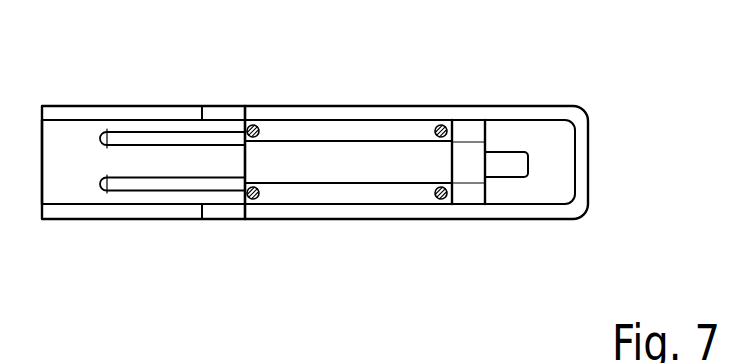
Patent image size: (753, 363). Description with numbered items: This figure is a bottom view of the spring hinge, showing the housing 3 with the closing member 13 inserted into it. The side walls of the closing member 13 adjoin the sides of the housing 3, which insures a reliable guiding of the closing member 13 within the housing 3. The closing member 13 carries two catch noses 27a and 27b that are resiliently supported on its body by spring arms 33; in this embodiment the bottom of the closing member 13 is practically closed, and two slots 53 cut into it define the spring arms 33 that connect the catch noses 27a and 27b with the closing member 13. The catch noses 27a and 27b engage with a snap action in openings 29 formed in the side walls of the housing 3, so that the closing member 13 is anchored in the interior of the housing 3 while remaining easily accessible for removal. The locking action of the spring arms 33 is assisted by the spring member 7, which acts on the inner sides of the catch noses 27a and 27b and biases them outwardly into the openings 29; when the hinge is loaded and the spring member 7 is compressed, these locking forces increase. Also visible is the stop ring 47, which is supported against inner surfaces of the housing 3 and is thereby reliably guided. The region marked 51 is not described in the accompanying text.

The housing 3 is at (583, 145).
The spring member 7 is at (443, 200).
The closing member 13 is at (62, 177).
The catch nose 27a is at (215, 120).
The catch nose 27b is at (230, 207).
The openings 29 is at (248, 113).
The spring arms 33 is at (152, 122).
The stop ring 47 is at (473, 133).
The cylinder wall 51 is at (392, 112).
The slots 53 is at (133, 187).